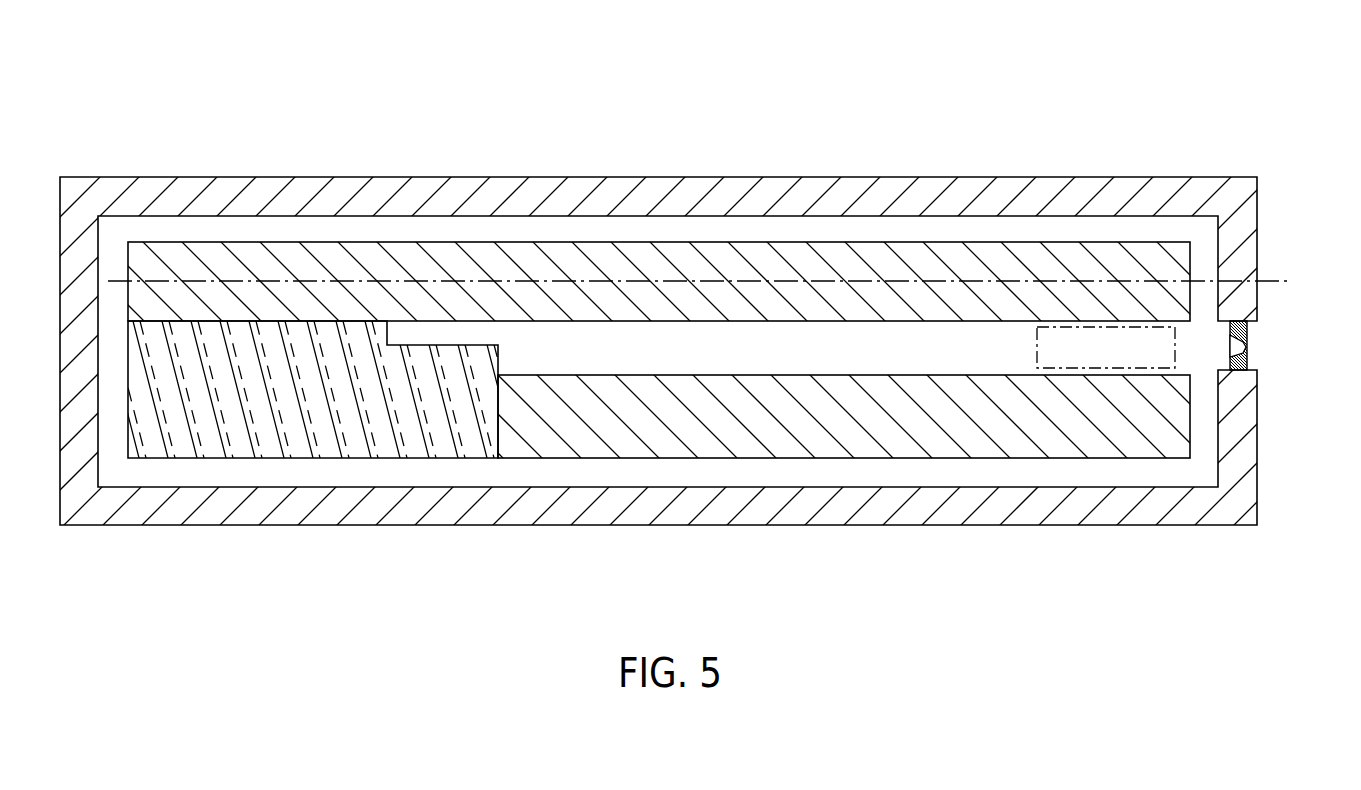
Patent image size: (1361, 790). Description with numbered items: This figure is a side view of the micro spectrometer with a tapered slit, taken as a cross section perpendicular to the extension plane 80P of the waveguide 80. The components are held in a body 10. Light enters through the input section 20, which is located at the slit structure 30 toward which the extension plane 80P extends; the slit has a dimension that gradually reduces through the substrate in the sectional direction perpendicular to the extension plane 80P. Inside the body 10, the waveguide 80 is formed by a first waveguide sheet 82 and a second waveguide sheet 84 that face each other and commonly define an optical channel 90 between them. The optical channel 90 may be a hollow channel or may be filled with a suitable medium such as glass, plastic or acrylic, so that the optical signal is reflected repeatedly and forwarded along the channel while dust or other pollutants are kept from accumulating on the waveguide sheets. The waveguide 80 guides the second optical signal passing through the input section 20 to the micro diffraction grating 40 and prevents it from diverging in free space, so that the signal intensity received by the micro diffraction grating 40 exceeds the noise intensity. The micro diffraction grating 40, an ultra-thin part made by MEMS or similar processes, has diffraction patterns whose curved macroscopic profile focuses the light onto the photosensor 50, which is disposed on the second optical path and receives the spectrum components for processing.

The body 10 is at (386, 190).
The input section 20 is at (1248, 327).
The slit structure 30 is at (1246, 349).
The micro diffraction grating 40 is at (246, 440).
The photosensor 50 is at (1093, 326).
The waveguide 80 is at (680, 287).
The first waveguide sheet 82 is at (609, 256).
The second waveguide sheet 84 is at (672, 395).
The extension plane 80P is at (1288, 280).
The optical channel 90 is at (837, 337).